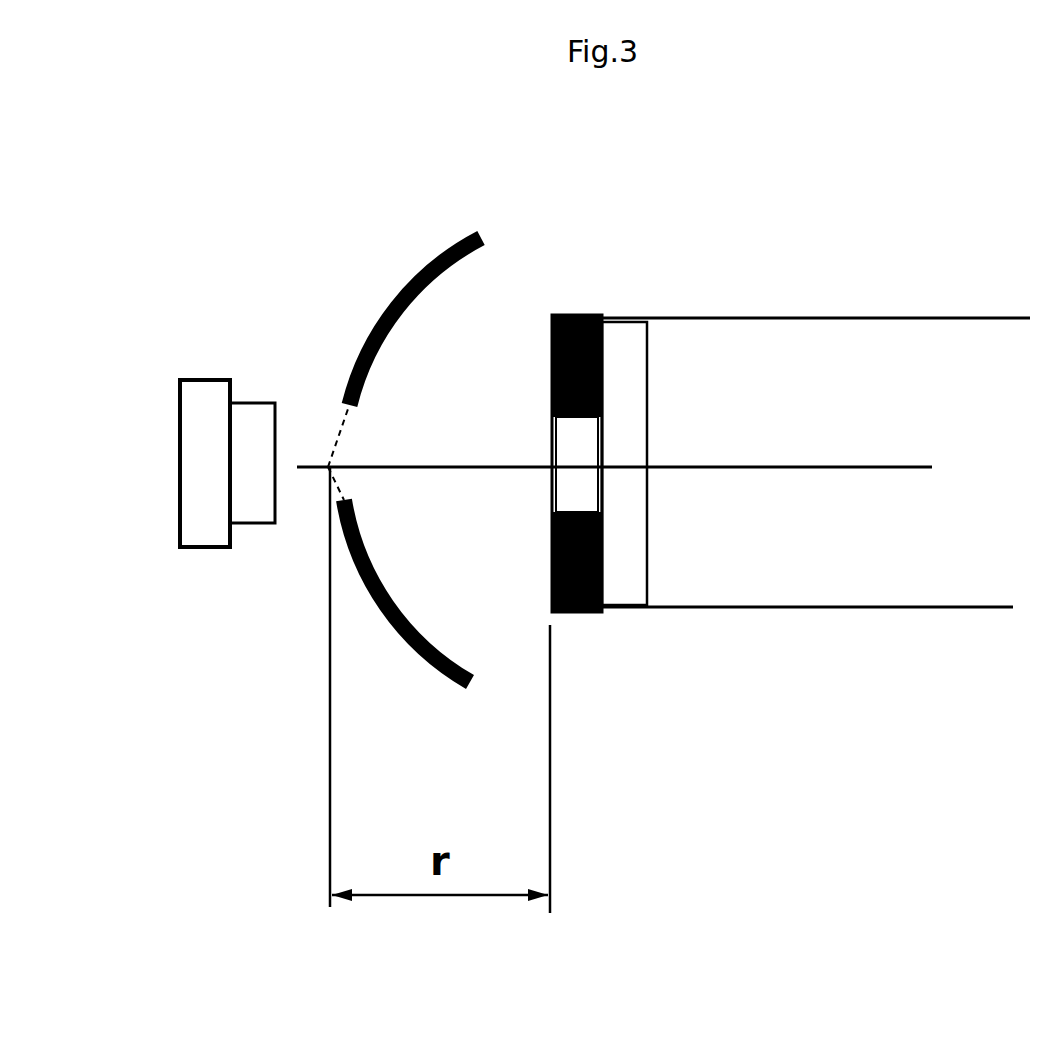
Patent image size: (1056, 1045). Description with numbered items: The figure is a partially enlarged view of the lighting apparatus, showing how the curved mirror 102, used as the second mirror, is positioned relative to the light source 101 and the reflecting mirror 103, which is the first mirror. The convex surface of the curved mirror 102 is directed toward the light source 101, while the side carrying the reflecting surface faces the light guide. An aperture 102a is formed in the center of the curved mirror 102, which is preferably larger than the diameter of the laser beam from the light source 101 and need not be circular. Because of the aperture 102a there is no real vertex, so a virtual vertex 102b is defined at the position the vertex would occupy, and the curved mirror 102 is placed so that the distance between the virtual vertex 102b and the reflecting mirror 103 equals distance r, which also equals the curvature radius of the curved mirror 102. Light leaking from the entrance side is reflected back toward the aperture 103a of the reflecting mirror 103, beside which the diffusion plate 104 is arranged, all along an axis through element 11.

The housing 11 is at (848, 470).
The light source 101 is at (210, 390).
The curved mirror 102 is at (425, 263).
The aperture 102a is at (352, 432).
The virtual vertex 102b is at (326, 466).
The reflecting mirror 103 is at (572, 318).
The aperture of reflecting mirror 103a is at (565, 492).
The diffusion plate 104 is at (623, 598).